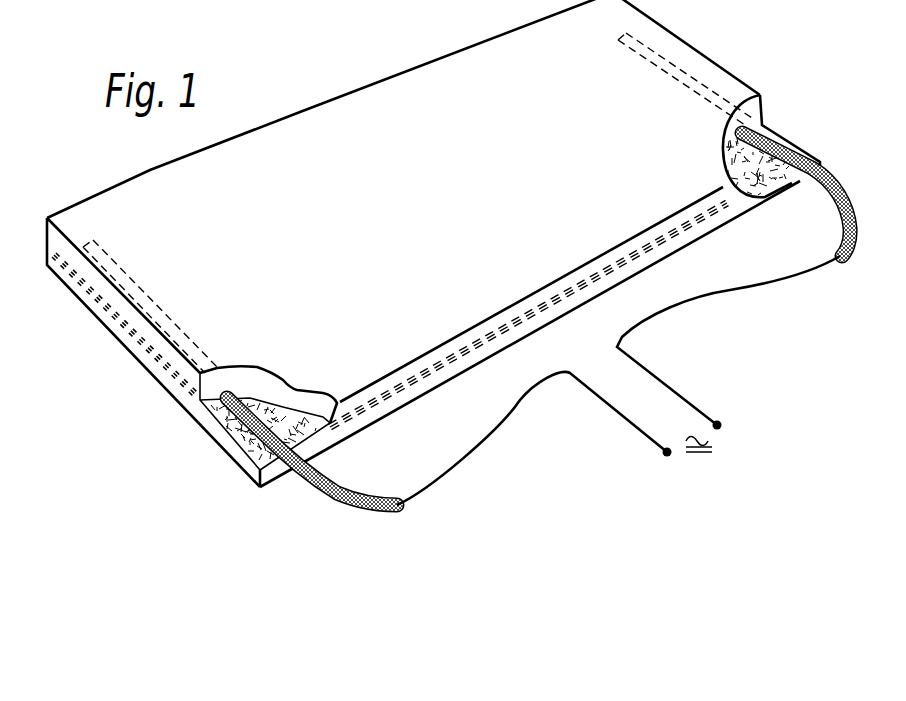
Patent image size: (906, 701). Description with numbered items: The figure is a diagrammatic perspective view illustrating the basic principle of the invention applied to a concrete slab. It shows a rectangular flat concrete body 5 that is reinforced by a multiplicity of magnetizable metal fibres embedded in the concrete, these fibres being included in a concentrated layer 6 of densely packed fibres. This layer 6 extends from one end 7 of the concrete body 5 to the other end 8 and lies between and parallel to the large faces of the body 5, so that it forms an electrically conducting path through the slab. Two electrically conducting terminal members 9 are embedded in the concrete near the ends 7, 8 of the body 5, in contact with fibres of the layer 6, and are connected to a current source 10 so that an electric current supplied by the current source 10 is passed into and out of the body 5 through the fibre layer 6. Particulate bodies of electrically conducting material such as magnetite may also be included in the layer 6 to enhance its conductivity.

The concrete body 5 is at (413, 90).
The concentrated layer 6 is at (85, 290).
The end of the concrete body 7 is at (157, 377).
The other end of the concrete body 8 is at (710, 53).
The terminal member 9 is at (817, 193).
The current source 10 is at (698, 457).